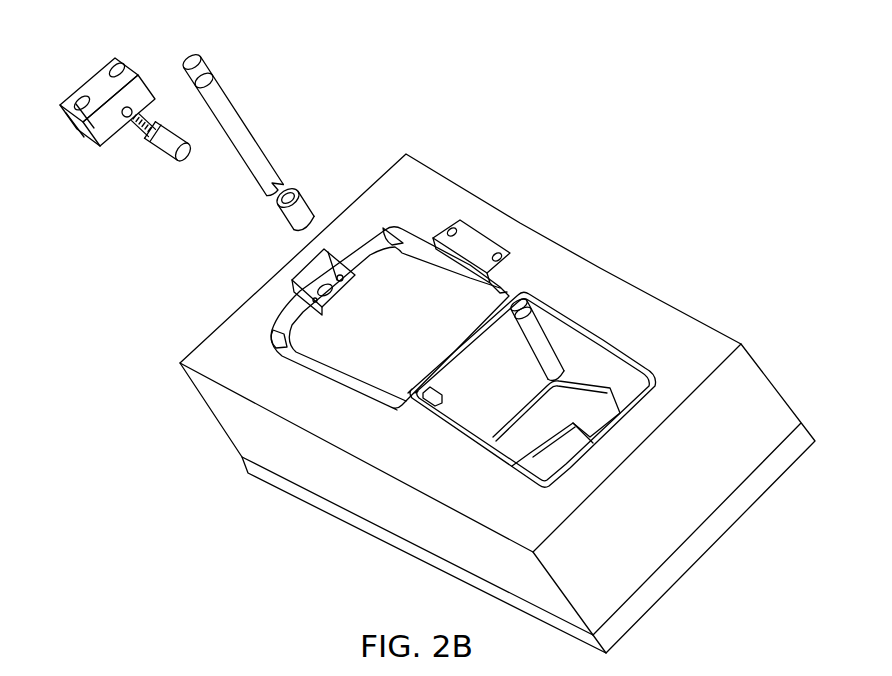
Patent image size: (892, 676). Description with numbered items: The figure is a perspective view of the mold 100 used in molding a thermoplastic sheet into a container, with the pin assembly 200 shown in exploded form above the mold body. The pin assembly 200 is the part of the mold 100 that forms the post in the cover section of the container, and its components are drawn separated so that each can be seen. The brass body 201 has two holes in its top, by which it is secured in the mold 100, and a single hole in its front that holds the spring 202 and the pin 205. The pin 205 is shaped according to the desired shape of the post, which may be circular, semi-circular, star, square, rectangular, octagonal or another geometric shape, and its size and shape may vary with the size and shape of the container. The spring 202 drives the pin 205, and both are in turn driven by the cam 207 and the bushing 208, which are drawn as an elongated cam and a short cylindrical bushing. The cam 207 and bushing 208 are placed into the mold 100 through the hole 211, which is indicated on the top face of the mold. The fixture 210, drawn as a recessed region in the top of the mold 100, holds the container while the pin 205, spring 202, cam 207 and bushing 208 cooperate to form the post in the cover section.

The mold 100 is at (664, 107).
The pin assembly 200 is at (297, 83).
The brass body 201 is at (84, 121).
The spring 202 is at (140, 133).
The pin 205 is at (163, 160).
The cam 207 is at (230, 127).
The bushing 208 is at (306, 215).
The fixture 210 is at (297, 325).
The hole 211 is at (338, 248).